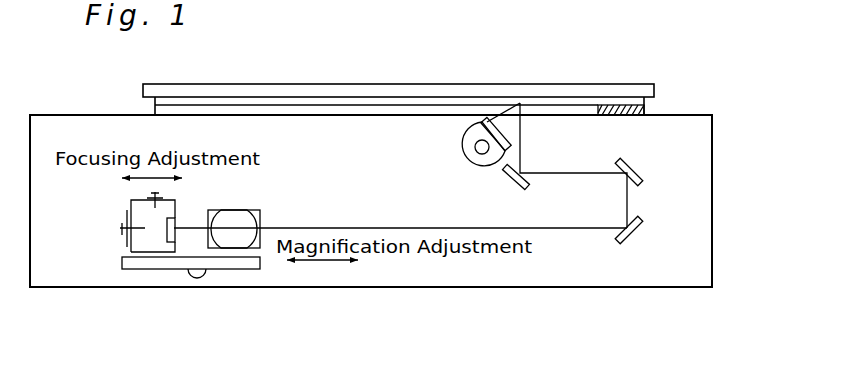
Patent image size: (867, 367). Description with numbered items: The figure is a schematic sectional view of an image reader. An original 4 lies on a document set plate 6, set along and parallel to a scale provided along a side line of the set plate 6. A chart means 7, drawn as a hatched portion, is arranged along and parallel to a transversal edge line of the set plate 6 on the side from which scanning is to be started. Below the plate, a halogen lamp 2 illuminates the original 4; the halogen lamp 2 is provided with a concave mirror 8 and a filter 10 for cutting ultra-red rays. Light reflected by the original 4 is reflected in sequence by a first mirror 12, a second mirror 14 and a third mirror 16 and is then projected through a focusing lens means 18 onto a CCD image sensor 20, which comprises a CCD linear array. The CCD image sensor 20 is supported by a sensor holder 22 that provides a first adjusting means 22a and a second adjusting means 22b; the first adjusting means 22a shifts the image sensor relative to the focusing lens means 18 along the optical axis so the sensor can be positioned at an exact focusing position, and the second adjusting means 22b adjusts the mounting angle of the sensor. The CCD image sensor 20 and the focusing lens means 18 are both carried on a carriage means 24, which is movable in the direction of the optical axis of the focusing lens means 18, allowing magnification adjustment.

The halogen lamp 2 is at (476, 151).
The original 4 is at (425, 103).
The document set plate 6 is at (392, 116).
The chart means 7 is at (646, 108).
The concave mirror 8 is at (463, 144).
The filter 10 is at (490, 125).
The first mirror 12 is at (521, 180).
The second mirror 14 is at (643, 172).
The third mirror 16 is at (643, 229).
The focusing lens means 18 is at (233, 238).
The CCD image sensor 20 is at (167, 241).
The sensor holder 22 is at (128, 238).
The first adjusting means 22a is at (117, 225).
The second adjusting means 22b is at (172, 193).
The carriage means 24 is at (248, 270).